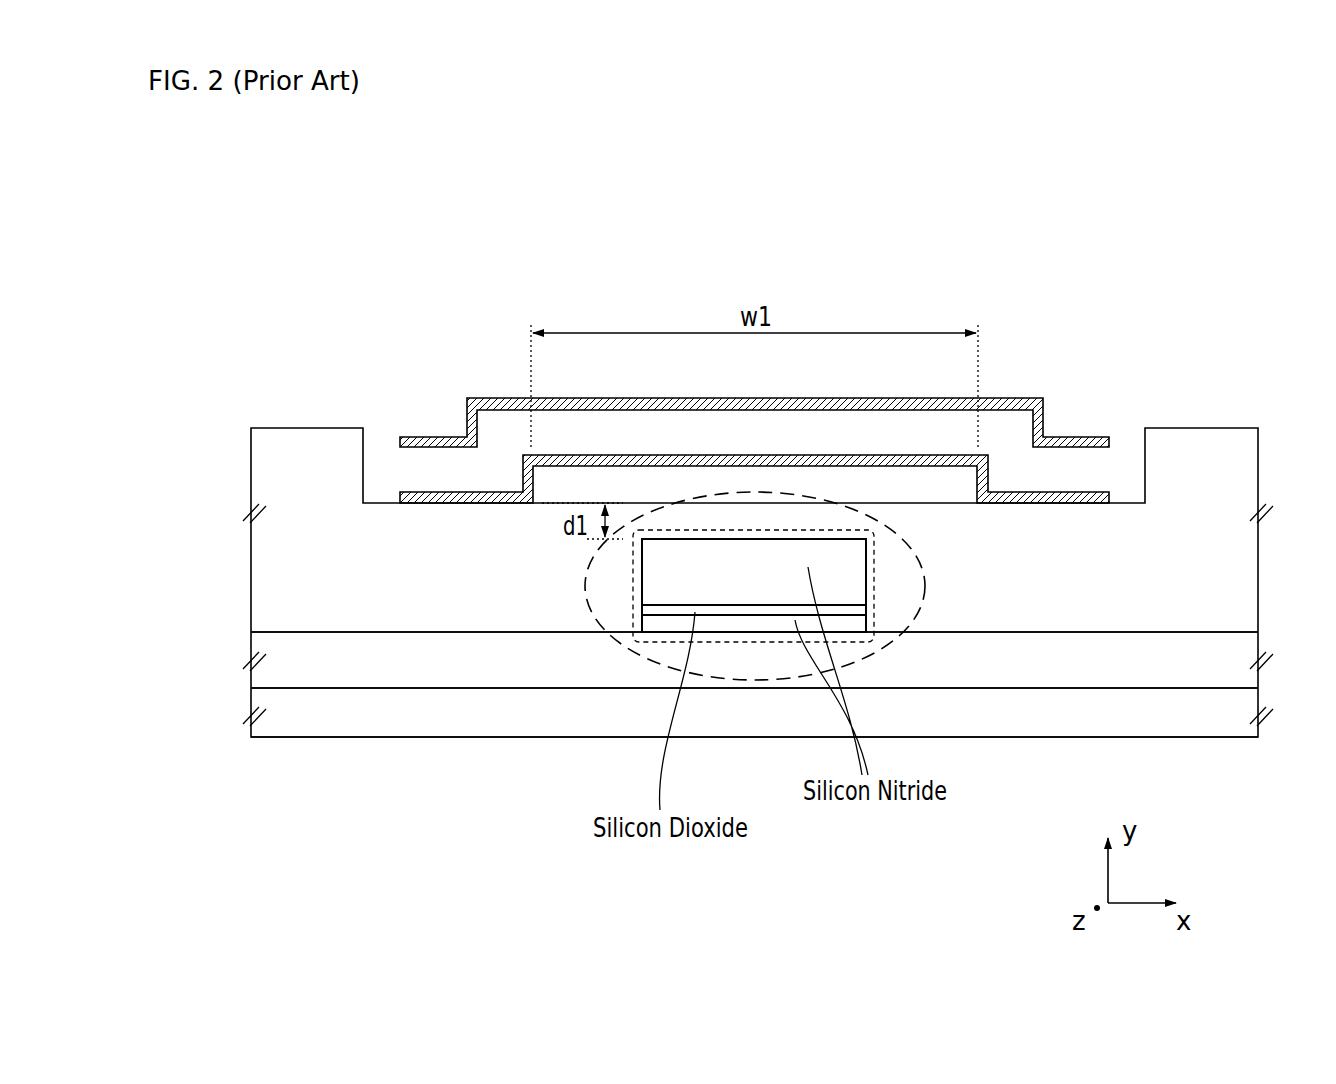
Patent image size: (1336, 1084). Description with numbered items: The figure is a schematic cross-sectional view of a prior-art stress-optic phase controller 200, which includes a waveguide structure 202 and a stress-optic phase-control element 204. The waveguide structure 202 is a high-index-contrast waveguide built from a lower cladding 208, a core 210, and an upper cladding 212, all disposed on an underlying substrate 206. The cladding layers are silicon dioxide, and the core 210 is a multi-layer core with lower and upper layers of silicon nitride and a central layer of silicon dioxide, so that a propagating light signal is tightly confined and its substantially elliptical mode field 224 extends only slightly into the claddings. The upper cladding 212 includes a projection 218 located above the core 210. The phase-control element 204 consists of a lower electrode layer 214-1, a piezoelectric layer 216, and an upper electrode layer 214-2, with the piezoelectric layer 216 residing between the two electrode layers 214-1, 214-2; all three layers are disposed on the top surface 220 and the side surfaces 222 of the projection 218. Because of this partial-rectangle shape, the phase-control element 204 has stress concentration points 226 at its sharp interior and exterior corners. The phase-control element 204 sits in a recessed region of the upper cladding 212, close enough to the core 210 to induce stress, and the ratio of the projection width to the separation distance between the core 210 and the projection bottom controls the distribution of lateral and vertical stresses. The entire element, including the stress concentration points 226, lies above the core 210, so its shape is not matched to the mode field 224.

The phase controller 200 is at (262, 280).
The waveguide structure 202 is at (233, 428).
The stress-optic phase-control element 204 is at (1064, 370).
The substrate 206 is at (1190, 726).
The lower cladding 208 is at (1212, 674).
The core 210 is at (628, 613).
The upper cladding 212 is at (1235, 607).
The electrode layer 214-1 is at (405, 495).
The electrode layer 214-2 is at (483, 398).
The piezoelectric layer 216 is at (503, 480).
The projection 218 is at (710, 488).
The top surface 220 is at (847, 461).
The side surfaces 222 is at (531, 480).
The mode field 224 is at (585, 587).
The stress concentration points 226 is at (446, 400).